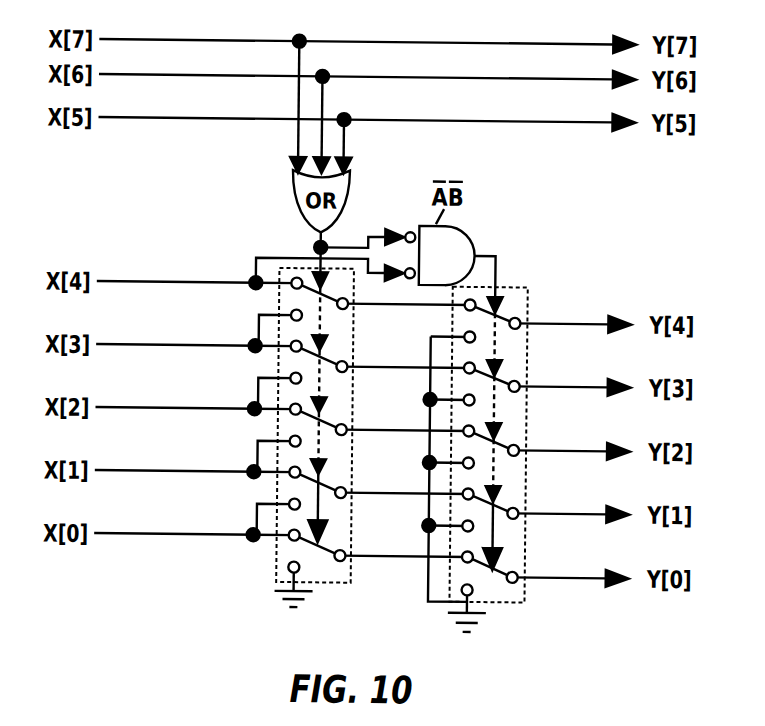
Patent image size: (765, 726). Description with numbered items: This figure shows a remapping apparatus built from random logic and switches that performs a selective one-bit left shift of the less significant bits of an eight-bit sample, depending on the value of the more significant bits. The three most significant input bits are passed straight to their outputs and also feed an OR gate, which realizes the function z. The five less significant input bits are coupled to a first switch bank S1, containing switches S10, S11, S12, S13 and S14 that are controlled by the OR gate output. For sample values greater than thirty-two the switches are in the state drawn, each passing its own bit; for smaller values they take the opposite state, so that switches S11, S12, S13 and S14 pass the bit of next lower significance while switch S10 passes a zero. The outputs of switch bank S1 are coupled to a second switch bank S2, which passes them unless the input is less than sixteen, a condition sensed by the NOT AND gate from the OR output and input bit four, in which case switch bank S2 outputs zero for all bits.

The first switch bank S1 is at (281, 446).
The second switch bank S2 is at (518, 600).
The switch S10 is at (332, 594).
The switch S11 is at (281, 500).
The switch S12 is at (282, 437).
The switch S13 is at (282, 374).
The switch S14 is at (283, 311).